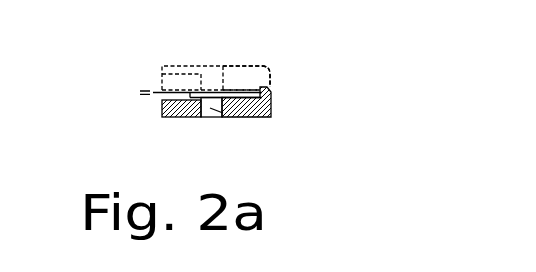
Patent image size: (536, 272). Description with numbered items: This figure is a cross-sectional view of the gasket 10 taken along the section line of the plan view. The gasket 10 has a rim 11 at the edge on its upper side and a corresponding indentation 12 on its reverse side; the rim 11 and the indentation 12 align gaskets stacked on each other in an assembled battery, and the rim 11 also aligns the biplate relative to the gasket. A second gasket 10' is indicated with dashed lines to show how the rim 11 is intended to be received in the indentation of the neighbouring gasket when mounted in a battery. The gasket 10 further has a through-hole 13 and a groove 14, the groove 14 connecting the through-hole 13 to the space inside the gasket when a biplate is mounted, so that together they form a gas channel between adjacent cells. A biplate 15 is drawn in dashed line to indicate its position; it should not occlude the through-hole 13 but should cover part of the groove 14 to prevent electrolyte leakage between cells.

The gasket 10 is at (172, 52).
The second gasket 10' is at (246, 56).
The rim 11 is at (270, 72).
The indentation 12 is at (276, 123).
The through-hole 13 is at (224, 117).
The groove 14 is at (186, 100).
The biplate 15 is at (140, 94).